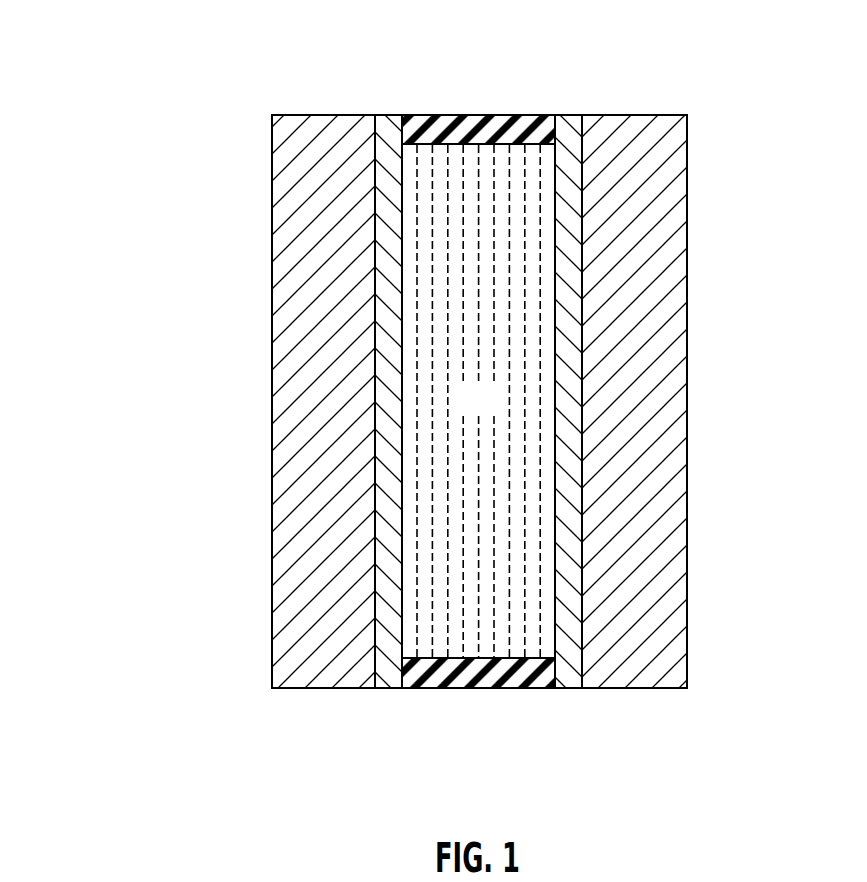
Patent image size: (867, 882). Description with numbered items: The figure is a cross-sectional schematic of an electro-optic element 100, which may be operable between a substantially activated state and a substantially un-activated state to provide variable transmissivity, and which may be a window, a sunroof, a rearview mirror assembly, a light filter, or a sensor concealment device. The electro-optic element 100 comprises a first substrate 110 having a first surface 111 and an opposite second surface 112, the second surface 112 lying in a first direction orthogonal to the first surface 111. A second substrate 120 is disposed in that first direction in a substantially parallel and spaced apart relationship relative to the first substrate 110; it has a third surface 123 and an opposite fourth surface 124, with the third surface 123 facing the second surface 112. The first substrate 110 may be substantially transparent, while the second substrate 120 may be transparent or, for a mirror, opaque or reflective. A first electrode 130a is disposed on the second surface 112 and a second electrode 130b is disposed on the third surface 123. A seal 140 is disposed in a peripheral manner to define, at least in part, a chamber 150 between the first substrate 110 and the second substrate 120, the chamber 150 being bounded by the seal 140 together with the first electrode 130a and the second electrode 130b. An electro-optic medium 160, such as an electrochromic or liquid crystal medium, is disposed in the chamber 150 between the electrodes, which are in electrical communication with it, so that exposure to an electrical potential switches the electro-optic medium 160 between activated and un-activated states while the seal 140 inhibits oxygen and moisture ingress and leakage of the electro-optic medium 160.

The electro-optic element 100 is at (180, 62).
The first substrate 110 is at (313, 181).
The first surface 111 is at (272, 161).
The second surface 112 is at (378, 388).
The second substrate 120 is at (653, 181).
The third surface 123 is at (583, 385).
The fourth surface 124 is at (687, 161).
The first electrode 130a is at (402, 113).
The second electrode 130b is at (582, 113).
The seal 140 is at (527, 672).
The chamber 150 is at (498, 411).
The electro-optic medium 160 is at (493, 615).